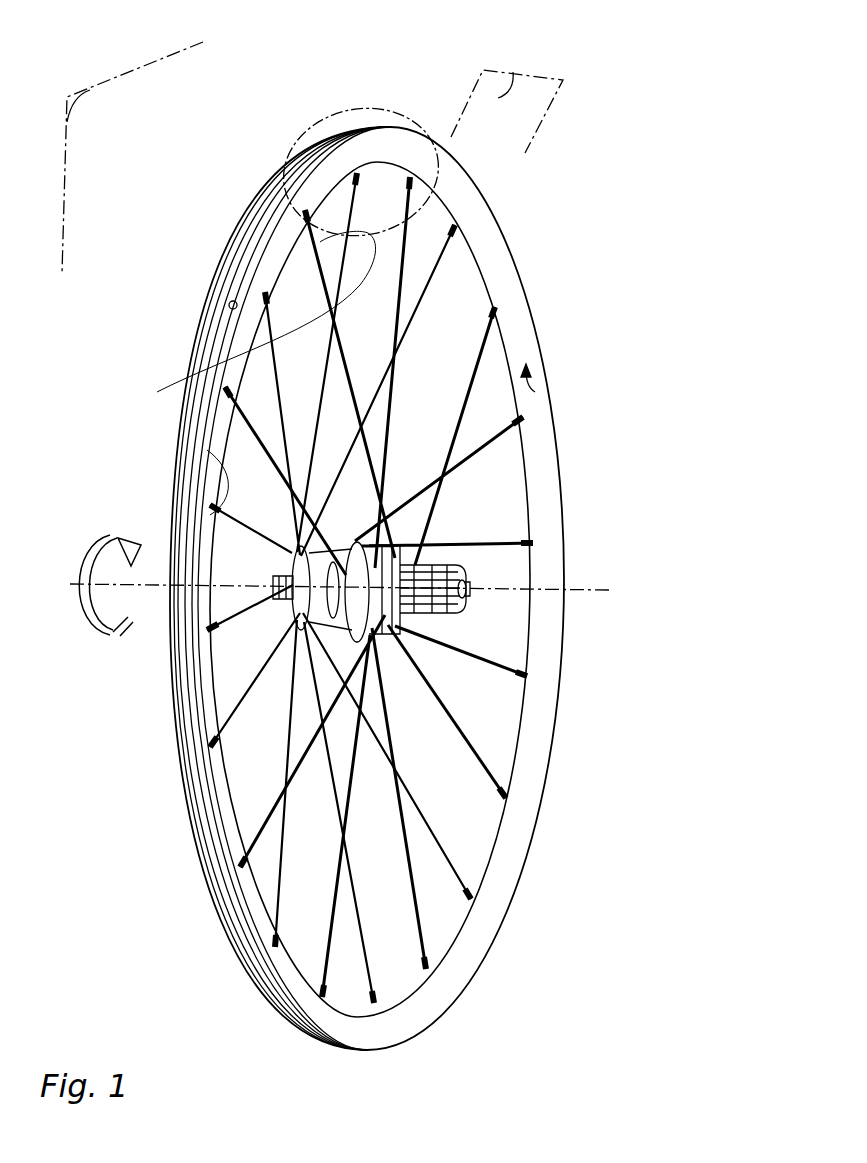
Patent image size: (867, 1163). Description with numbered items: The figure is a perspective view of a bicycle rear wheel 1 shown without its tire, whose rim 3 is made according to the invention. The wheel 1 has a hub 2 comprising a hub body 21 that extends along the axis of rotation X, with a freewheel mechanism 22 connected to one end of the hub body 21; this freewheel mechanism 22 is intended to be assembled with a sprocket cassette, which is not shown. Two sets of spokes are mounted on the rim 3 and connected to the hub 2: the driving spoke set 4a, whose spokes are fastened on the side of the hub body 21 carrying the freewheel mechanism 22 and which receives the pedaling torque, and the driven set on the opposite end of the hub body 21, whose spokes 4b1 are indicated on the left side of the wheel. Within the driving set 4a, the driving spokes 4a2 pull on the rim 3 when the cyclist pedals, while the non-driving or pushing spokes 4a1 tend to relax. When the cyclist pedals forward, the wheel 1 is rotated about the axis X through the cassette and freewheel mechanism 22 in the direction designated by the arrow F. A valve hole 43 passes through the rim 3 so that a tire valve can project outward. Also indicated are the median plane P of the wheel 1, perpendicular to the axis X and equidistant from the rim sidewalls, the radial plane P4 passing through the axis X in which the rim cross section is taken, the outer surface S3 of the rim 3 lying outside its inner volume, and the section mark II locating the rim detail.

The bicycle rear wheel 1 is at (283, 120).
The hub 2 is at (268, 580).
The rim 3 is at (452, 173).
The spoke set 4a is at (490, 347).
The non-driving spokes 4a1 is at (423, 925).
The driving spokes 4a2 is at (477, 740).
The spokes 4b1 is at (212, 440).
The hub body 21 is at (335, 660).
The freewheel mechanism 22 is at (432, 560).
The valve hole 43 is at (226, 298).
The median plane P is at (132, 157).
The radial plane P4 is at (507, 110).
The outer surface S3 is at (535, 392).
The axis of rotation X is at (351, 593).
The arrow F is at (110, 593).
The section II is at (367, 112).